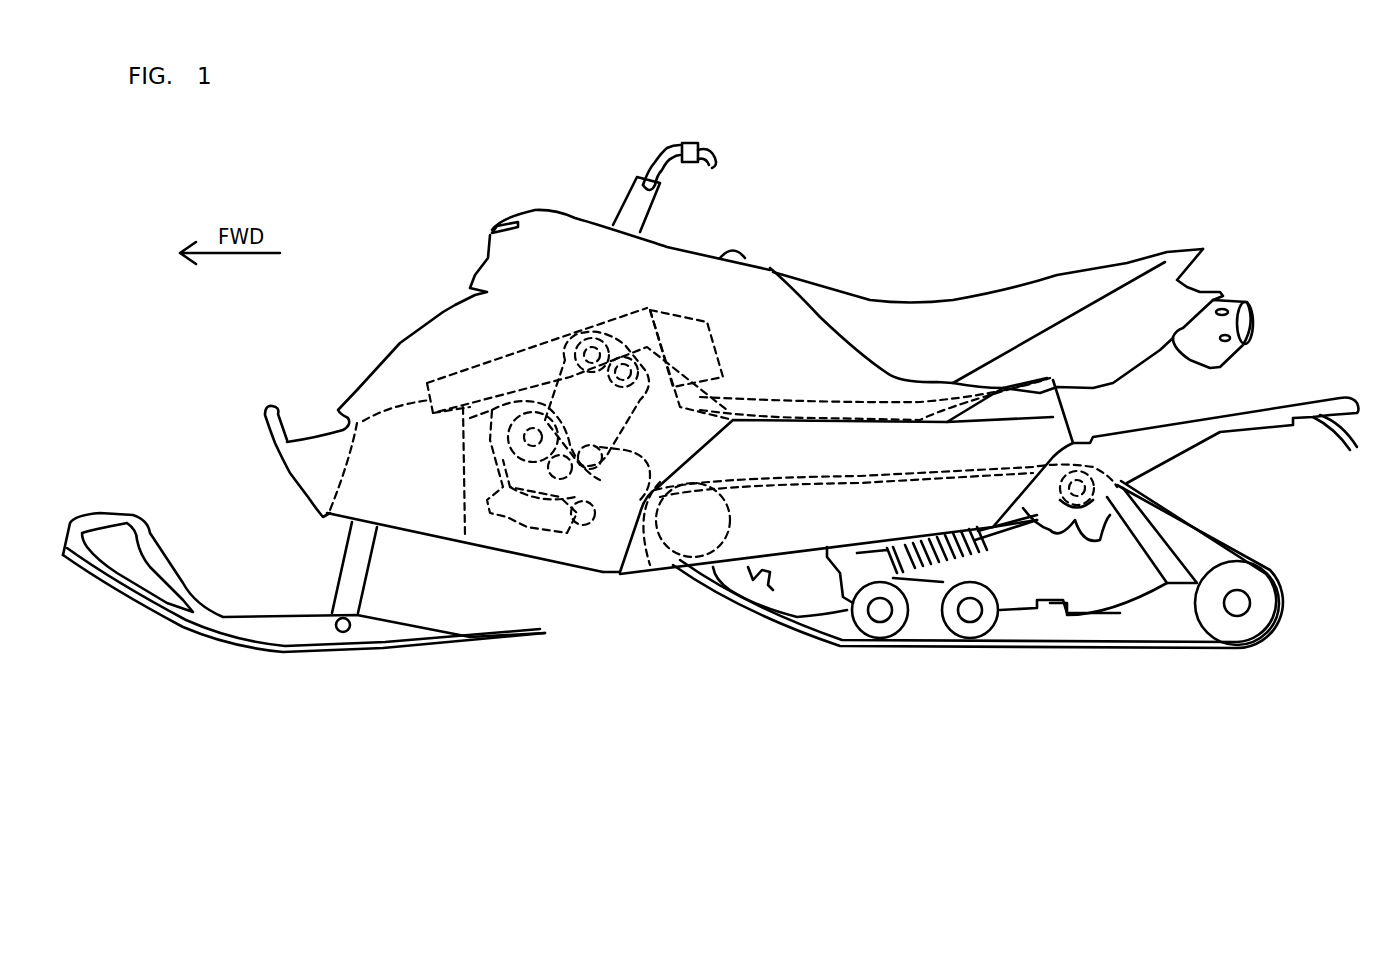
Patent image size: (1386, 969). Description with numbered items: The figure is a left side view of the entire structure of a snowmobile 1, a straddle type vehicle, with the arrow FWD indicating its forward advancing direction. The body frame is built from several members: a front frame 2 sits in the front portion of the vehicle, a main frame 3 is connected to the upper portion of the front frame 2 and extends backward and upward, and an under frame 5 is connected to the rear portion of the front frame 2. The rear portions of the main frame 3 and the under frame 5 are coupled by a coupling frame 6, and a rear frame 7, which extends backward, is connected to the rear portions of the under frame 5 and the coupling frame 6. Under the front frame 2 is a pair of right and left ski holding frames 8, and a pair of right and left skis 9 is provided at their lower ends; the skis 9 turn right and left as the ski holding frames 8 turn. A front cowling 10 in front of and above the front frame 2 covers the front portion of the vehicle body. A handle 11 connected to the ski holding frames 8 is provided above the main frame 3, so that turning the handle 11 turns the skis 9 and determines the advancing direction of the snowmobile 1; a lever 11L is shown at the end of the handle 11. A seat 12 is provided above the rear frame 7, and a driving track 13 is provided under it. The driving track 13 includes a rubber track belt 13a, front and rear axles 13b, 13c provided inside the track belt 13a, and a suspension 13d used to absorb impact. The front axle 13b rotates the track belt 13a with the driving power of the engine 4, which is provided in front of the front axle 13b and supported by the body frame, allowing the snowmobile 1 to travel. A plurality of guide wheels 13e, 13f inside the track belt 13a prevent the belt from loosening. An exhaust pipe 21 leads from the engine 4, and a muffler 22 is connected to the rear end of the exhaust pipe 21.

The snowmobile 1 is at (846, 160).
The front frame 2 is at (419, 520).
The main frame 3 is at (607, 330).
The engine 4 is at (519, 553).
The under frame 5 is at (482, 535).
The coupling frame 6 is at (700, 337).
The rear frame 7 is at (1053, 427).
The ski holding frames 8 is at (347, 572).
The skis 9 is at (262, 625).
The front cowling 10 is at (360, 400).
The handle 11 is at (663, 163).
The left brake lever 11L is at (710, 142).
The seat 12 is at (947, 310).
The driving track 13 is at (705, 640).
The track belt 13a is at (690, 588).
The front axle 13b is at (670, 543).
The rear axle 13c is at (1255, 575).
The suspension 13d is at (960, 540).
The guide wheels 13e is at (882, 630).
The guide wheel 13f is at (1122, 490).
The exhaust pipe 21 is at (947, 383).
The muffler 22 is at (1157, 367).